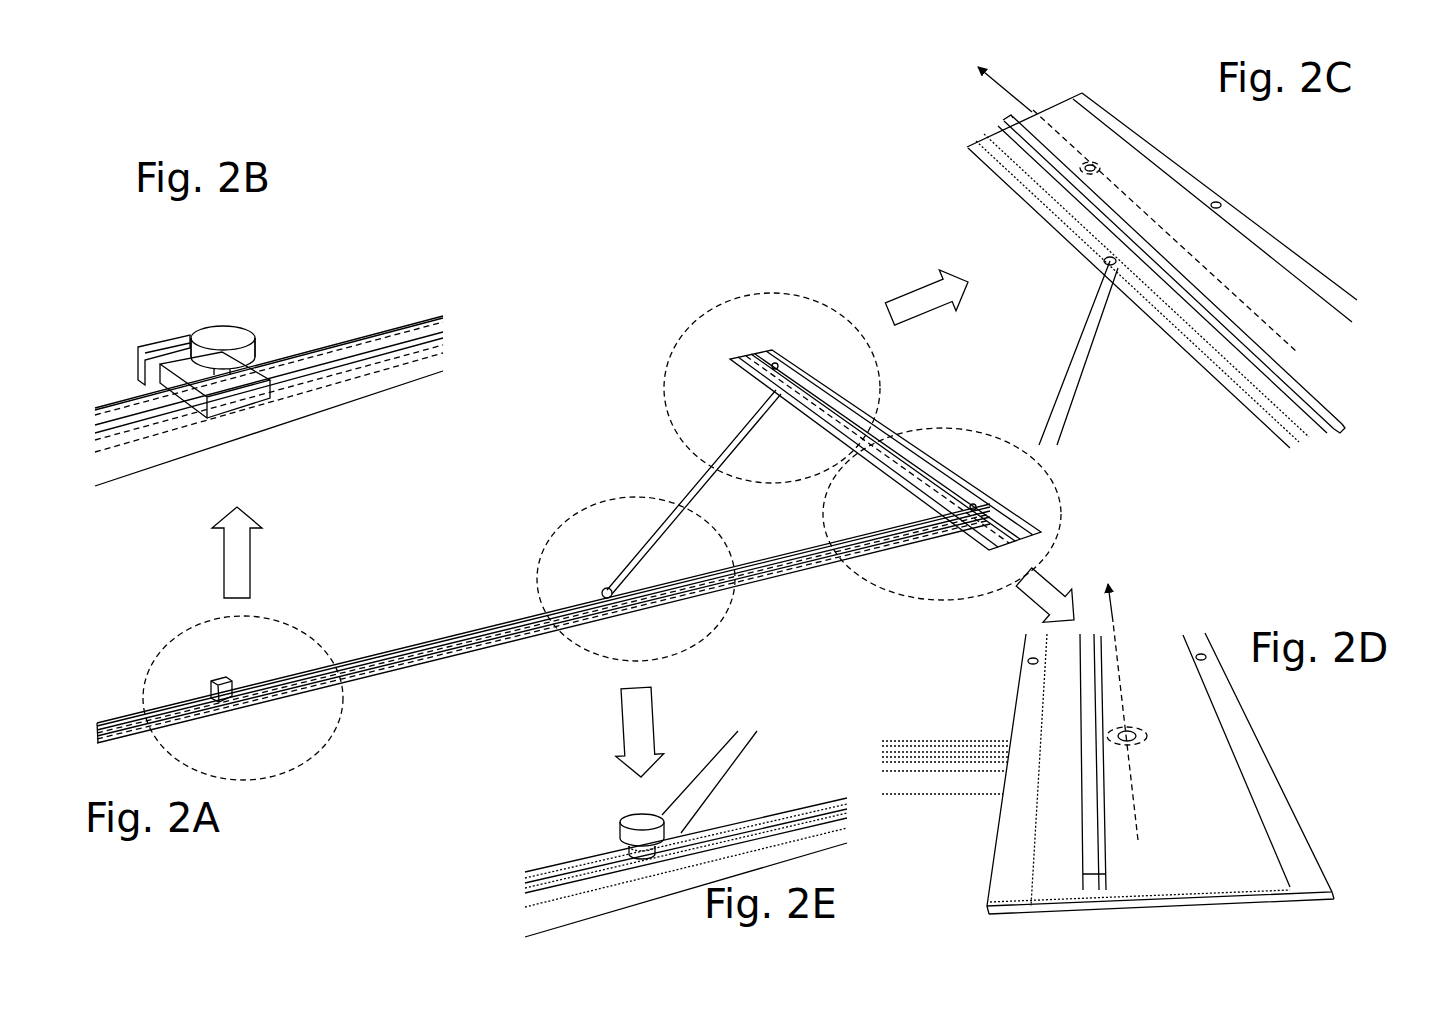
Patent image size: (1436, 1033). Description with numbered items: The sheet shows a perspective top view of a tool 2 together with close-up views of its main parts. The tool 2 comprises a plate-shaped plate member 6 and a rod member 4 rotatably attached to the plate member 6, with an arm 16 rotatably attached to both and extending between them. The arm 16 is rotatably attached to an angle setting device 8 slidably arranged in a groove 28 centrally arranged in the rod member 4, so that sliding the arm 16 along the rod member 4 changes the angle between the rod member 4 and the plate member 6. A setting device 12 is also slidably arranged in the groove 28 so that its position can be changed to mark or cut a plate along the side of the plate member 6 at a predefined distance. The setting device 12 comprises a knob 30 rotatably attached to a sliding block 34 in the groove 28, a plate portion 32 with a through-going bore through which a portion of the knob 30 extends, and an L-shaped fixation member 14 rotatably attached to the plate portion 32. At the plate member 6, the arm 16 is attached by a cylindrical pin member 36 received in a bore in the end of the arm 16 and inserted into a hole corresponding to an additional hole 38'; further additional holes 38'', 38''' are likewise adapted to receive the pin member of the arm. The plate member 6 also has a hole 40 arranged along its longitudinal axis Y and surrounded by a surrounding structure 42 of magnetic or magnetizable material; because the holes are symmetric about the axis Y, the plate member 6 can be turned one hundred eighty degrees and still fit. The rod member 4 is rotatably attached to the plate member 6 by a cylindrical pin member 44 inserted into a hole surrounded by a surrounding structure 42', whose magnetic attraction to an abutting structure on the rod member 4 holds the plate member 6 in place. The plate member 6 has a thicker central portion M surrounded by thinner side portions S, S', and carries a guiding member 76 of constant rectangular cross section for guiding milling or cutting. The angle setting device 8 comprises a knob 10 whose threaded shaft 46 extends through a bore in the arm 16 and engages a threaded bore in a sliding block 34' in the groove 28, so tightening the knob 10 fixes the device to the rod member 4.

In FIG. 2A, the tool 2 is at (640, 442).
In FIG. 2B, the rod member 4 is at (142, 460).
In FIG. 2A, the rod member 4 is at (450, 637).
In FIG. 2D, the rod member 4 is at (908, 770).
In FIG. 2E, the rod member 4 is at (538, 870).
In FIG. 2A, the plate member 6 is at (886, 425).
In FIG. 2C, the plate member 6 is at (1279, 282).
In FIG. 2D, the plate member 6 is at (1276, 811).
In FIG. 2A, the angle setting device 8 is at (606, 586).
In FIG. 2E, the angle setting device 8 is at (607, 794).
In FIG. 2E, the knob 10 is at (638, 818).
In FIG. 2B, the setting device 12 is at (258, 308).
In FIG. 2A, the setting device 12 is at (243, 670).
In FIG. 2B, the L-shaped fixation member 14 is at (165, 347).
In FIG. 2A, the arm 16 is at (690, 490).
In FIG. 2C, the arm 16 is at (1075, 364).
In FIG. 2E, the arm 16 is at (725, 753).
In FIG. 2B, the groove 28 is at (330, 367).
In FIG. 2E, the groove 28 is at (773, 835).
In FIG. 2B, the knob 30 is at (223, 337).
In FIG. 2B, the plate portion 32 is at (243, 397).
In FIG. 2B, the sliding block 34 is at (269, 355).
In FIG. 2E, the sliding block 34' is at (588, 828).
In FIG. 2C, the cylindrical pin member 36 is at (1110, 261).
In FIG. 2C, the additional hole 38' is at (1243, 169).
In FIG. 2D, the additional hole 38'' is at (979, 765).
In FIG. 2D, the additional hole 38''' is at (1236, 604).
In FIG. 2C, the hole 40 is at (1089, 162).
In FIG. 2C, the surrounding structure 42 is at (1101, 109).
In FIG. 2D, the surrounding structure 42' is at (1217, 720).
In FIG. 2D, the cylindrical pin member 44 is at (1130, 728).
In FIG. 2E, the shaft 46 is at (645, 862).
In FIG. 2A, the guiding member 76 is at (995, 527).
In FIG. 2C, the guiding member 76 is at (1287, 378).
In FIG. 2D, the guiding member 76 is at (1082, 820).
In FIG. 2C, the longitudinal axis Y is at (1007, 96).
In FIG. 2D, the longitudinal axis Y is at (1116, 610).
In FIG. 2D, the central portion M is at (1233, 866).
In FIG. 2D, the side portion S is at (1358, 830).
In FIG. 2D, the side portion S' is at (955, 871).